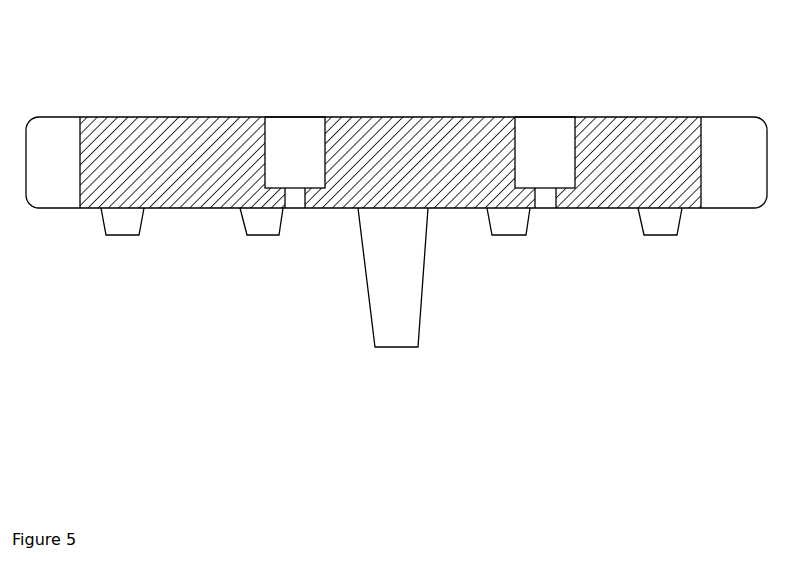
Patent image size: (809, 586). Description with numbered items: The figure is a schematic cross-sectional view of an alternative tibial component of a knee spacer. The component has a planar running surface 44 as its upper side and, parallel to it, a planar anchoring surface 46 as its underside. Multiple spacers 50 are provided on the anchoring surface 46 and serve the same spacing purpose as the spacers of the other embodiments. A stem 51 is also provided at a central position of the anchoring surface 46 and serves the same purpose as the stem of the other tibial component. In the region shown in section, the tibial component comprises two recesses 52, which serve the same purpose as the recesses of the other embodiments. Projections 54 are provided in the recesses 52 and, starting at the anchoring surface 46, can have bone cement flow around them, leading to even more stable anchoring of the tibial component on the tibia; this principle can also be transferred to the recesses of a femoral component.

The running surface 44 is at (472, 116).
The anchoring surface 46 is at (190, 211).
The spacer 50 is at (126, 220).
The stem 51 is at (397, 308).
The recess 52 is at (297, 172).
The projection 54 is at (275, 186).